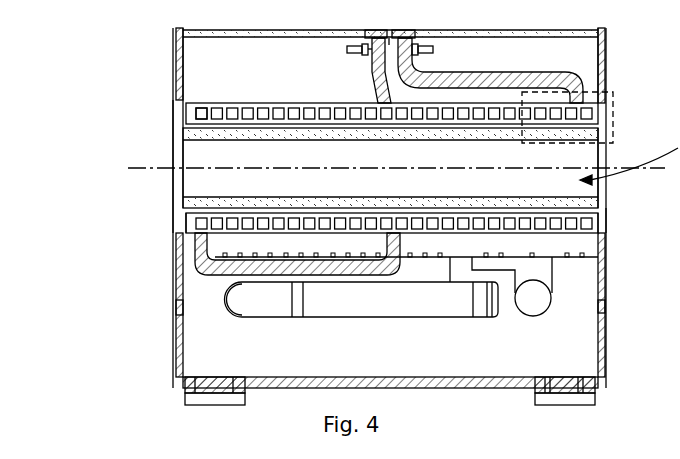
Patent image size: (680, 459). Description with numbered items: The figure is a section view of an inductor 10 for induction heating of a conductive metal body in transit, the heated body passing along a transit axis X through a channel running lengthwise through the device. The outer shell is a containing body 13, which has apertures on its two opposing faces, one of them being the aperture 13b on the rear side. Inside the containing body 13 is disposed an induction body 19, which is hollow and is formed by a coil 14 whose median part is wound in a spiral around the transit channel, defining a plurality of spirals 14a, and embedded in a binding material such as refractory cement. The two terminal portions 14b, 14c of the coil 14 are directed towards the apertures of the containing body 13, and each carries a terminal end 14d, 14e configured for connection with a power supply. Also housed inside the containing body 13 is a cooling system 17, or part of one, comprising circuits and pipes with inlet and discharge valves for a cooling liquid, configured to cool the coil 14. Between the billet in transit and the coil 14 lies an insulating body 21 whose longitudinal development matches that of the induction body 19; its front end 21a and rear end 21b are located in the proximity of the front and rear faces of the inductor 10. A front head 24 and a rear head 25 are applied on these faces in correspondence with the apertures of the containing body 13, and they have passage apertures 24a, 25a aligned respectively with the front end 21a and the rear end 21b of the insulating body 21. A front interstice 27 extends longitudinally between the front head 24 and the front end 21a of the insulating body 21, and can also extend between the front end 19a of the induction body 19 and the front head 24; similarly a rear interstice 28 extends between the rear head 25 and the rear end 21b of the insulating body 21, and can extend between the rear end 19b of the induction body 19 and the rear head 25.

The inductor 10 is at (101, 58).
The containing body 13 is at (178, 342).
The aperture 13b is at (178, 103).
The coil 14 is at (454, 56).
The spirals 14a is at (202, 110).
The terminal portion 14b is at (525, 80).
The terminal portion 14c is at (383, 88).
The terminal end 14d is at (403, 32).
The terminal end 14e is at (375, 32).
The cooling system 17 is at (345, 303).
The induction body 19 is at (255, 96).
The front end 19a is at (592, 223).
The rear end 19b is at (187, 222).
The insulating body 21 is at (335, 133).
The front end 21a is at (597, 147).
The rear end 21b is at (183, 162).
The front head 24 is at (606, 195).
The passage aperture 24a is at (606, 216).
The rear head 25 is at (173, 135).
The passage aperture 25a is at (173, 192).
The front interstice 27 is at (598, 113).
The rear interstice 28 is at (182, 118).
The transit axis X is at (128, 168).